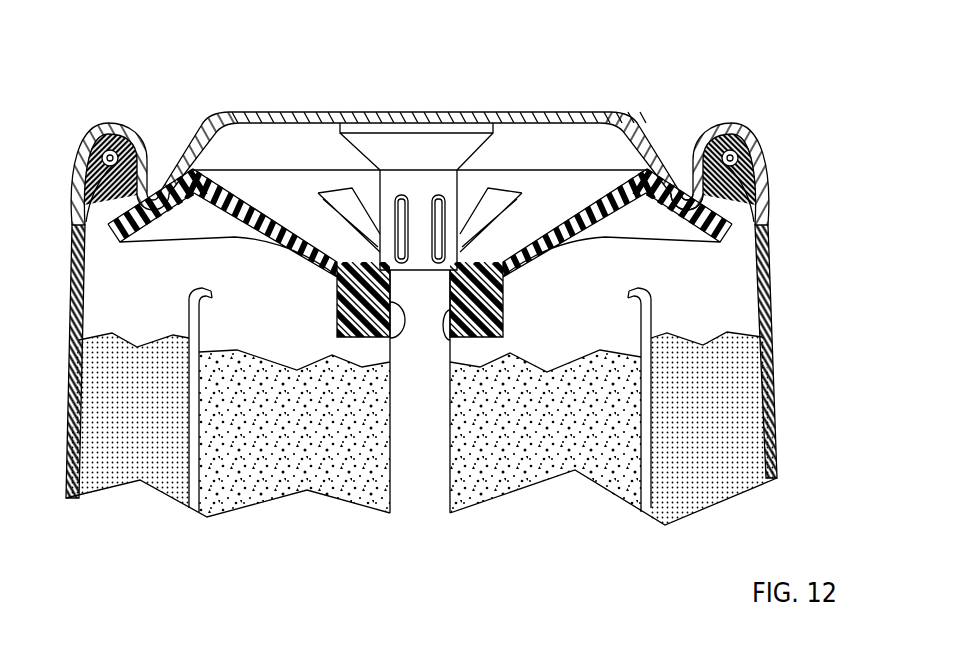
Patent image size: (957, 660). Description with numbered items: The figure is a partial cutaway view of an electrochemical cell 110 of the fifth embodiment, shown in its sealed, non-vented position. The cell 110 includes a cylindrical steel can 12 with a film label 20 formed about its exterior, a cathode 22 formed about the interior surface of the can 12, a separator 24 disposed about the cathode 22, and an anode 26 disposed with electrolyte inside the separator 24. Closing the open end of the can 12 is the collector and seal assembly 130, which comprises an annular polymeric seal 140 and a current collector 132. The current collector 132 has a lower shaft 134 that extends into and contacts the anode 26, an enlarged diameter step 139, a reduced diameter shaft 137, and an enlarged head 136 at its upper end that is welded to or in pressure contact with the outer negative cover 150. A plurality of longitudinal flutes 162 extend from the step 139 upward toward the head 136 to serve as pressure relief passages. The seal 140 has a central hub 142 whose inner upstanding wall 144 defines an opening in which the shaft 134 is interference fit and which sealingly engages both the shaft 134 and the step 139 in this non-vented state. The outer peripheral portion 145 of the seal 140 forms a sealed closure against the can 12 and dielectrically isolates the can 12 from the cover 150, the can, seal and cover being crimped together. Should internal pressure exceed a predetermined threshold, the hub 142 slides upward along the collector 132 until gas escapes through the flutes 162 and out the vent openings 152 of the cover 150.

The electrochemical cell 110 is at (800, 147).
The steel can 12 is at (777, 452).
The film label 20 is at (777, 405).
The cathode 22 is at (720, 493).
The separator 24 is at (654, 513).
The anode 26 is at (537, 470).
The collector and seal assembly 130 is at (333, 158).
The current collector 132 is at (462, 347).
The lower shaft 134 is at (407, 505).
The enlarged head 136 is at (374, 143).
The reduced diameter shaft 137 is at (453, 220).
The enlarged diameter step 139 is at (498, 275).
The annular seal 140 is at (273, 203).
The central hub 142 is at (337, 323).
The inner upstanding wall 144 is at (383, 340).
The outer peripheral portion 145 is at (720, 125).
The outer negative cover 150 is at (223, 112).
The vent openings 152 is at (670, 162).
The longitudinal flutes 162 is at (432, 218).